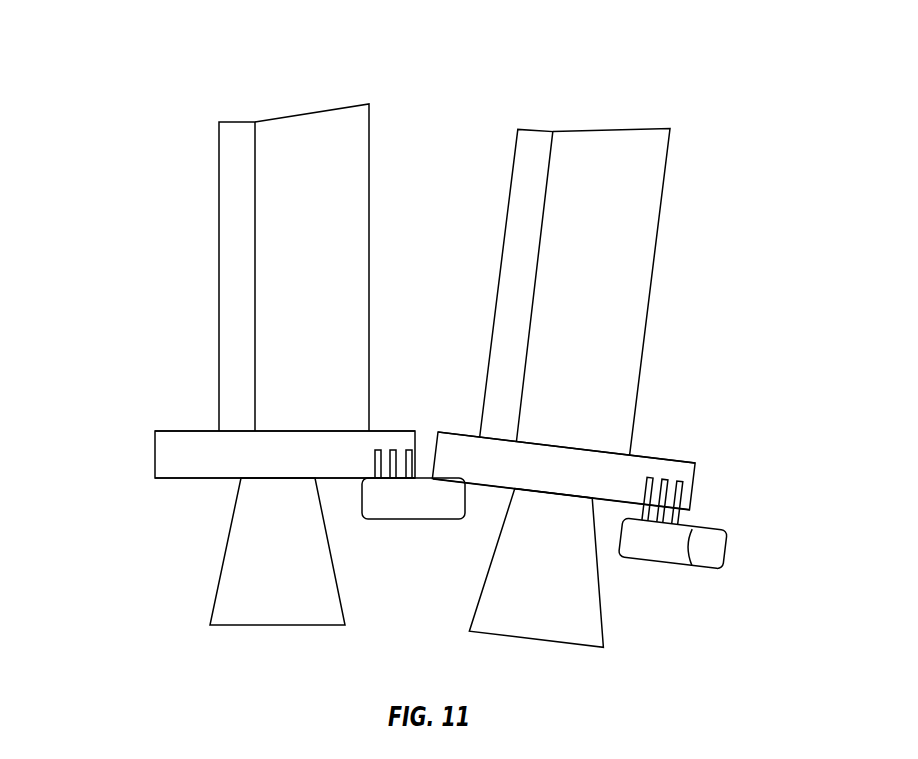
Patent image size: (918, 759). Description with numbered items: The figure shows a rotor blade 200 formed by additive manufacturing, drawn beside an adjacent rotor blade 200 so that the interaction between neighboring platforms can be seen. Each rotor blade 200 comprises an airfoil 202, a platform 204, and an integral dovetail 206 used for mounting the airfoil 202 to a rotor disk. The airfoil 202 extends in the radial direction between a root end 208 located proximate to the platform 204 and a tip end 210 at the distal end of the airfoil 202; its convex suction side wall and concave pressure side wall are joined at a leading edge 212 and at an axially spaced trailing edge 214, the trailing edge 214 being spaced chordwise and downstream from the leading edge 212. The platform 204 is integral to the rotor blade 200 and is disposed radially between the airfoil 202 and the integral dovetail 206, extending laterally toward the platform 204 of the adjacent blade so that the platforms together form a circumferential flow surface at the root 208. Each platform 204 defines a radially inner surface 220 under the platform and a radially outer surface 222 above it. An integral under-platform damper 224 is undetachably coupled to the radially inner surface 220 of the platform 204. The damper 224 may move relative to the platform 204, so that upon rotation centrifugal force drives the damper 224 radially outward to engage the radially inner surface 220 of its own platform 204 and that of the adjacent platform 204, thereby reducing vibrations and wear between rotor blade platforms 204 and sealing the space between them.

The rotor blade 200 is at (172, 73).
The airfoil 202 is at (347, 253).
The platform 204 is at (173, 455).
The integral dovetail 206 is at (235, 576).
The root end 208 is at (638, 446).
The tip end 210 is at (684, 130).
The leading edge 212 is at (219, 292).
The trailing edge 214 is at (369, 348).
The radially inner surface 220 is at (177, 480).
The radially outer surface 222 is at (168, 430).
The under-platform damper 224 is at (400, 512).